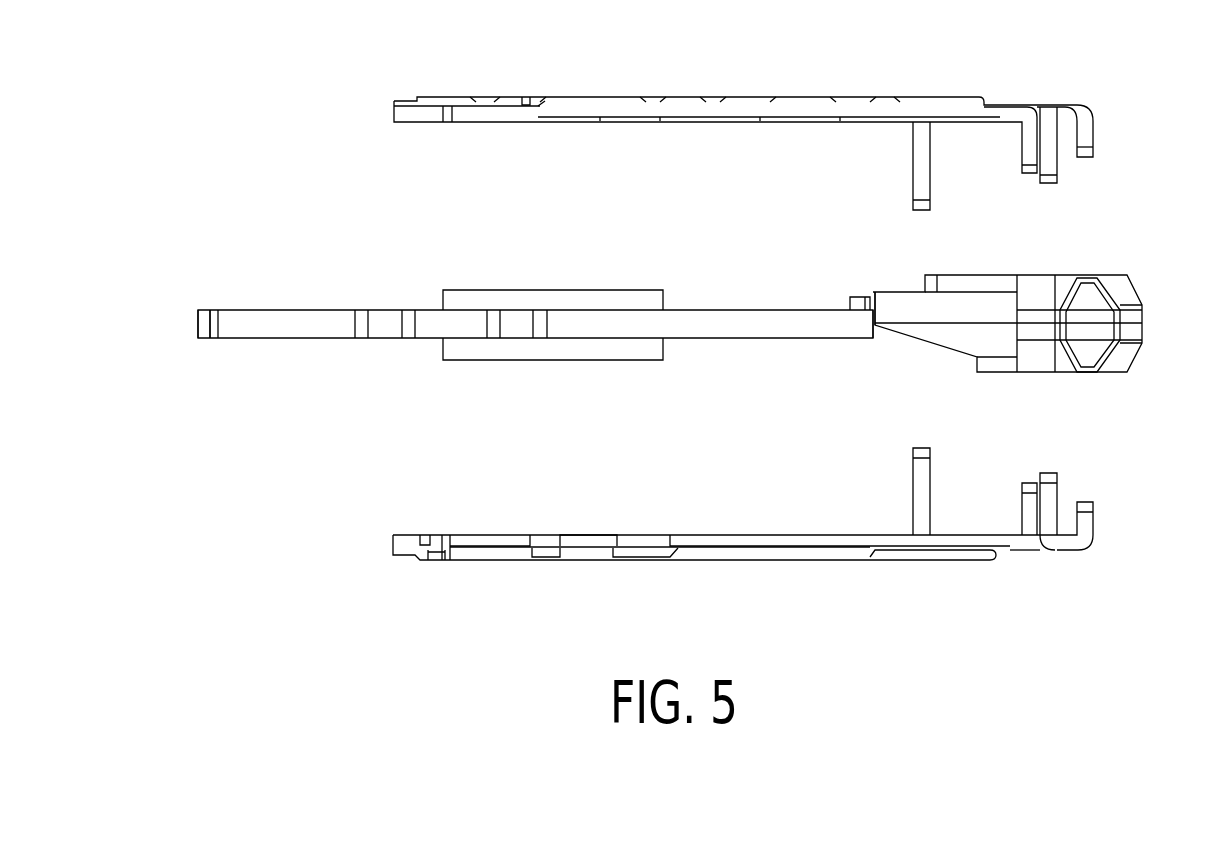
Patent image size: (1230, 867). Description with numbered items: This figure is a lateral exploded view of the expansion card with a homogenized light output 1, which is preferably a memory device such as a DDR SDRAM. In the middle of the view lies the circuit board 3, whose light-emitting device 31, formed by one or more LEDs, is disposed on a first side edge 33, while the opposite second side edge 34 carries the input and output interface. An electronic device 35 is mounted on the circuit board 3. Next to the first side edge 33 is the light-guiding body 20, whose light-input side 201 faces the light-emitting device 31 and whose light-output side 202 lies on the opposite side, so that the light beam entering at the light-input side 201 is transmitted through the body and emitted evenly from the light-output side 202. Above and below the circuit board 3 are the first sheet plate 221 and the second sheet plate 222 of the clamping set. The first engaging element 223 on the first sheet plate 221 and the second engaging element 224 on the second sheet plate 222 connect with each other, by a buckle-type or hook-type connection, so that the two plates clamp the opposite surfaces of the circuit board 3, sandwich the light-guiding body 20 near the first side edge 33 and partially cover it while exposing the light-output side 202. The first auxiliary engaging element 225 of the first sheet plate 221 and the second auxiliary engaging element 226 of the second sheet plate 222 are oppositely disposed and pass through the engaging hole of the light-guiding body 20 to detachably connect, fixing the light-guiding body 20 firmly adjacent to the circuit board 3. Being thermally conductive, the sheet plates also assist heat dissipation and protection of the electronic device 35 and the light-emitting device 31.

The expansion card with a homogenized light output 1 is at (1218, 88).
The circuit board 3 is at (288, 327).
The light-emitting device 31 is at (855, 295).
The first side edge 33 is at (873, 323).
The second side edge 34 is at (198, 327).
The electronic device 35 is at (568, 345).
The light-guiding body 20 is at (1045, 338).
The light-input side 201 is at (882, 315).
The light-output side 202 is at (1142, 320).
The first sheet plate 221 is at (890, 115).
The second sheet plate 222 is at (975, 545).
The first engaging element 223 is at (1049, 165).
The second engaging element 224 is at (1049, 490).
The first auxiliary engaging element 225 is at (923, 185).
The second auxiliary engaging element 226 is at (923, 472).